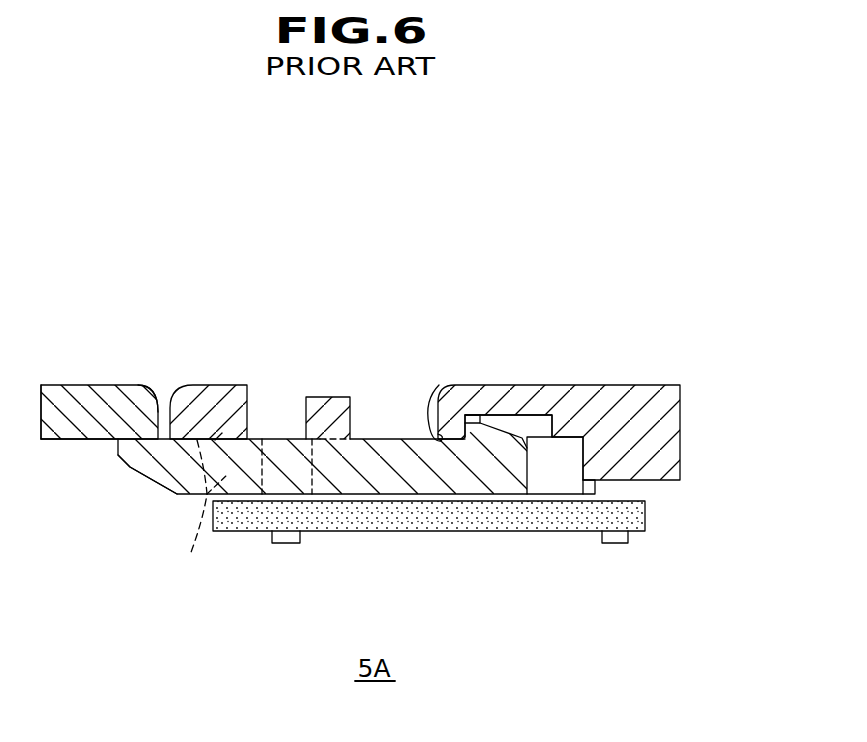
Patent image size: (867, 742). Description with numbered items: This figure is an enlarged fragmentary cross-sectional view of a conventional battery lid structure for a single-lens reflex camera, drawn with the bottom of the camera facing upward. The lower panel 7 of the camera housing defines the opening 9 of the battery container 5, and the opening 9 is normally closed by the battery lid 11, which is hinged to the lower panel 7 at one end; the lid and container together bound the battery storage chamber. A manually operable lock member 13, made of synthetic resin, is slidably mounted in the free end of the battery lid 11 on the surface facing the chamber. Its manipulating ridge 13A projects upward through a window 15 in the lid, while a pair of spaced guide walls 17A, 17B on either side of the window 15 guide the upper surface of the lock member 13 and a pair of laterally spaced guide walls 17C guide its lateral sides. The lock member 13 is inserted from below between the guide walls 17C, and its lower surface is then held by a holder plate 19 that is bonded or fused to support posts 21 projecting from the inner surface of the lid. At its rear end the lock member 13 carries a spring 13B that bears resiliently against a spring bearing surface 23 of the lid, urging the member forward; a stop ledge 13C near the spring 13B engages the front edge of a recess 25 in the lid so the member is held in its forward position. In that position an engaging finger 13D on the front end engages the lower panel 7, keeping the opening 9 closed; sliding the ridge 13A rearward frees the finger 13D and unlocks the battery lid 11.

The battery container 5 is at (70, 440).
The lower panel 7 is at (80, 387).
The opening 9 is at (155, 390).
The battery lid 11 is at (634, 378).
The manually operable lock member 13 is at (389, 430).
The manipulating ridge 13A is at (320, 397).
The spring 13B is at (542, 480).
The stop ledge 13C is at (479, 414).
The engaging finger 13D is at (152, 477).
The window 15 is at (257, 387).
The guide wall 17A is at (215, 440).
The guide wall 17B is at (439, 385).
The lateral guide walls 17C is at (199, 514).
The holder plate 19 is at (423, 518).
The support posts 21 is at (283, 545).
The spring bearing surface 23 is at (580, 465).
The recess 25 is at (531, 417).